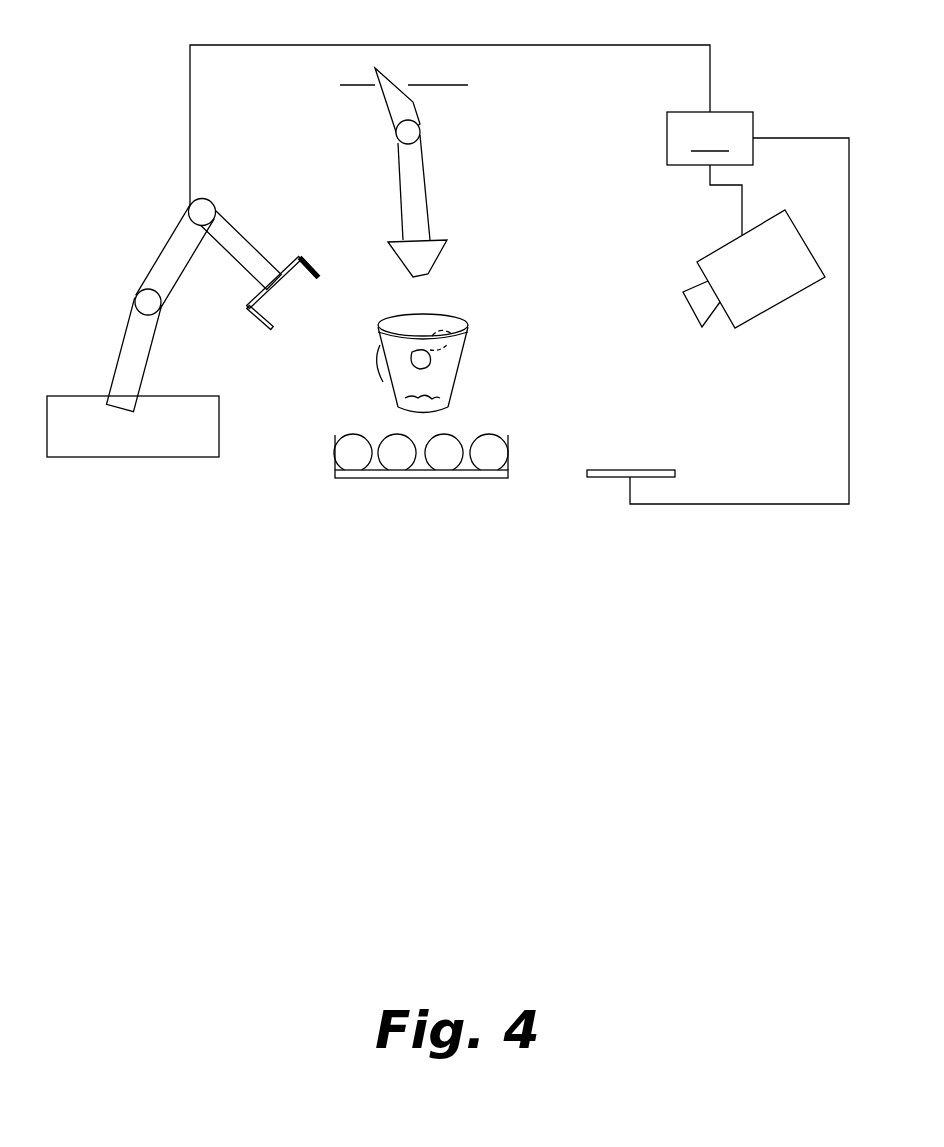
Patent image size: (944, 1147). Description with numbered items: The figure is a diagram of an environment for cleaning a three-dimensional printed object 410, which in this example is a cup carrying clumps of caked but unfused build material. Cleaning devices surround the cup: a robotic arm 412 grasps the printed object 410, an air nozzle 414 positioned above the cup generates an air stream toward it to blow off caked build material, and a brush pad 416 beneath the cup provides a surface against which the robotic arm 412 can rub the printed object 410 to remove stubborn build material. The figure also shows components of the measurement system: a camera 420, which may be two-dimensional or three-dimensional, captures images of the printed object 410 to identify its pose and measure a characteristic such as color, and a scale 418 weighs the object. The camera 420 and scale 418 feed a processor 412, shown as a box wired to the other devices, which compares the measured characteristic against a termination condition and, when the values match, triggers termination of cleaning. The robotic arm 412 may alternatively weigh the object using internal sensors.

The 3D printed object 410 is at (463, 343).
The robotic arm 412 is at (173, 253).
The air nozzle 414 is at (415, 222).
The brush pad 416 is at (348, 455).
The scale 418 is at (625, 472).
The camera 420 is at (708, 268).